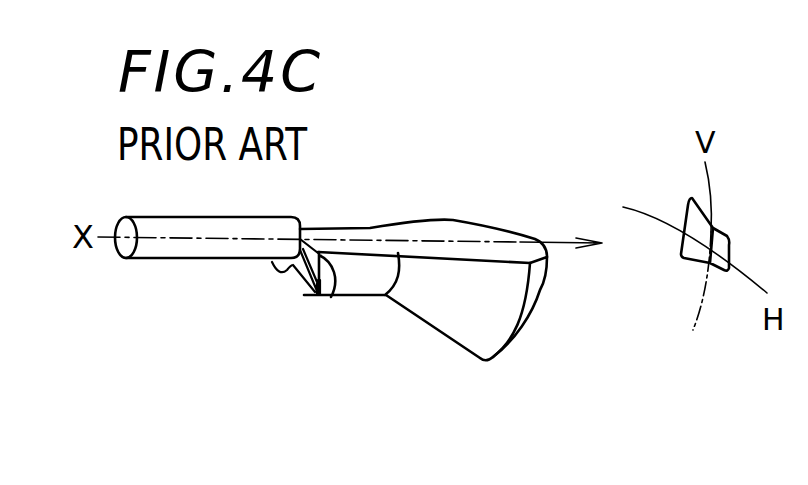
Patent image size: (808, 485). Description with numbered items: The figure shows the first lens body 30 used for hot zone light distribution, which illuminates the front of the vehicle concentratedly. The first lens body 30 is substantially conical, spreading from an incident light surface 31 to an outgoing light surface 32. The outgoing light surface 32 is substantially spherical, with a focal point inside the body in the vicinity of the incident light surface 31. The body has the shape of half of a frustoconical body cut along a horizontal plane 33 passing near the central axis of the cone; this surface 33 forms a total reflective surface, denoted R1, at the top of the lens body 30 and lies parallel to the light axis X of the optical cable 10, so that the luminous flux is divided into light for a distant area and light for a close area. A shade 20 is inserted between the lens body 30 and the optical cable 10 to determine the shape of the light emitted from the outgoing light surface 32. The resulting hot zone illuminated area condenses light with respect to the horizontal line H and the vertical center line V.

The optical cable 10 is at (160, 248).
The shade 20 is at (281, 276).
The first lens body 30 is at (413, 298).
The incident light surface 31 is at (333, 290).
The outgoing light surface 32 is at (538, 290).
The horizontal plane 33 is at (442, 232).